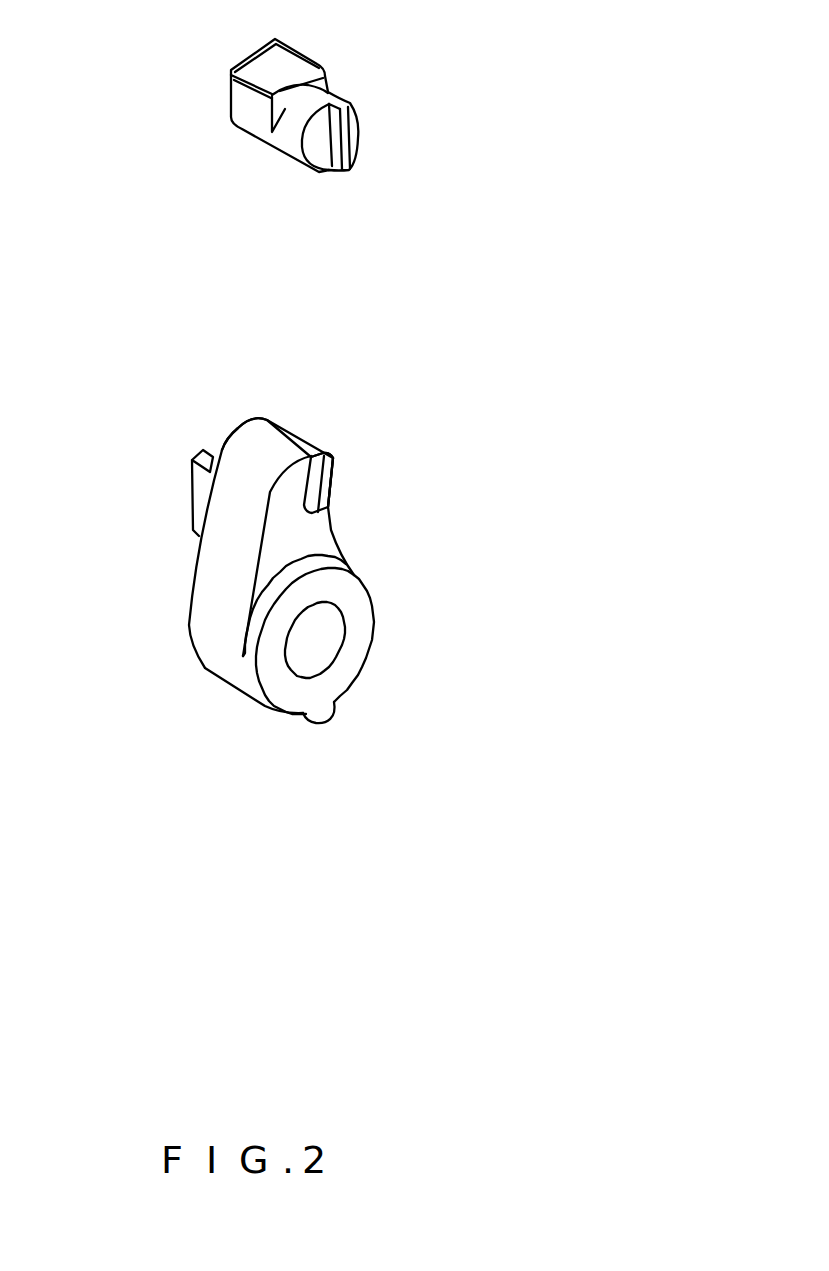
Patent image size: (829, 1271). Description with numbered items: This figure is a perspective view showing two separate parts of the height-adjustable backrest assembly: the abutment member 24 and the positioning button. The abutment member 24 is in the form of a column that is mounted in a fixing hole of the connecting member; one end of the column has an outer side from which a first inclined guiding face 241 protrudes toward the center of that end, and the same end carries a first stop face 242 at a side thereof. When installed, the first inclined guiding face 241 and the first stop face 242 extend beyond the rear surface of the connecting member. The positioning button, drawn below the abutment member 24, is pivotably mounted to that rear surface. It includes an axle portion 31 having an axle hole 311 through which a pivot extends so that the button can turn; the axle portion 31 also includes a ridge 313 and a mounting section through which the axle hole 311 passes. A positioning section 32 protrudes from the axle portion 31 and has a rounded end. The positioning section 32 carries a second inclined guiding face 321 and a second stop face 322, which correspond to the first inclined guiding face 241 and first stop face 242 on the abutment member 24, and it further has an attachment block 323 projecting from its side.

The abutment member 24 is at (352, 75).
The first inclined guiding face 241 is at (352, 133).
The first stop face 242 is at (340, 147).
The axle portion 31 is at (227, 675).
The axle hole 311 is at (310, 643).
The ridge 313 is at (302, 717).
The positioning section 32 is at (263, 437).
The second inclined guiding face 321 is at (332, 493).
The second stop face 322 is at (315, 477).
The attachment block 323 is at (199, 508).